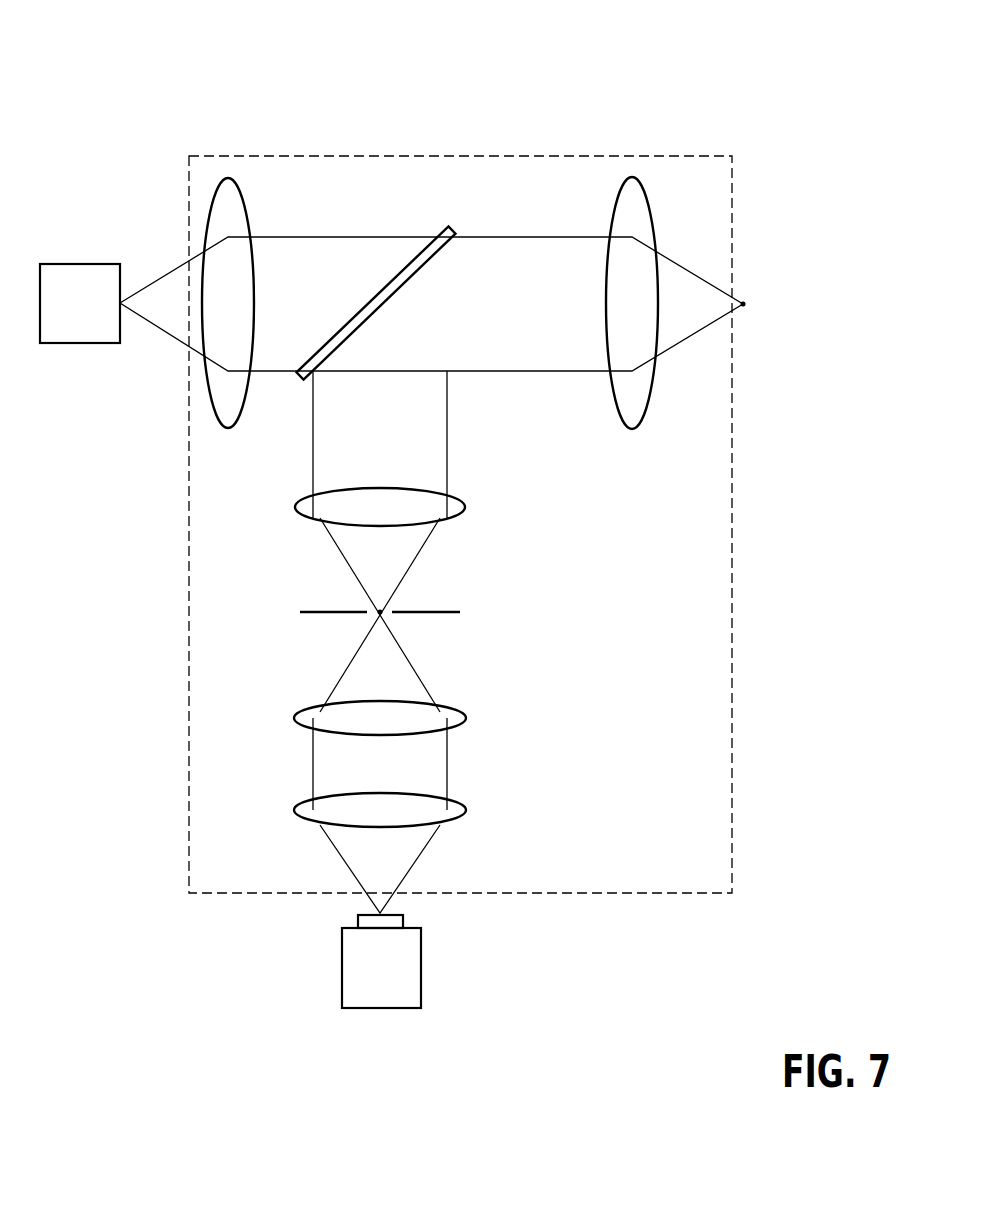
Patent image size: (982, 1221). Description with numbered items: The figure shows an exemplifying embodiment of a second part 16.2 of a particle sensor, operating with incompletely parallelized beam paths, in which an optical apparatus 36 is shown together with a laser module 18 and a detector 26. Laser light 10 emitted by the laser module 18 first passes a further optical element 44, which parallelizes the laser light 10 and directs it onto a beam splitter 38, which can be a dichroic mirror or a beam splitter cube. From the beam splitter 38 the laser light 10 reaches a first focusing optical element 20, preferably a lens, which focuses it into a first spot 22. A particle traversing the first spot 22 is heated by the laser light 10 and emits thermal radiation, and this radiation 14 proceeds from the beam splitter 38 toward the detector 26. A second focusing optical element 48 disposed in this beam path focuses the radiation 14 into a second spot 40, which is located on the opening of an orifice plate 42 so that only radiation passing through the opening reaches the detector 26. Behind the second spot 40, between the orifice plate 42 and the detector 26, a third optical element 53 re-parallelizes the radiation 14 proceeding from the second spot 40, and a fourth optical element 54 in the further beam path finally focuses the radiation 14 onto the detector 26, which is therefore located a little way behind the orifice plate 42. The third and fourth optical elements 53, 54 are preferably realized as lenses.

The second part 16.2 is at (150, 103).
The optical apparatus 36 is at (655, 147).
The laser module 18 is at (80, 345).
The laser light 10 is at (350, 237).
The further optical element 44 is at (228, 444).
The first focusing optical element 20 is at (632, 446).
The first spot 22 is at (750, 304).
The beam splitter 38 is at (460, 221).
The radiation 14 is at (450, 393).
The second focusing optical element 48 is at (303, 524).
The orifice plate 42 is at (436, 606).
The second spot 40 is at (378, 614).
The third optical element 53 is at (455, 717).
The fourth optical element 54 is at (455, 810).
The detector 26 is at (421, 968).